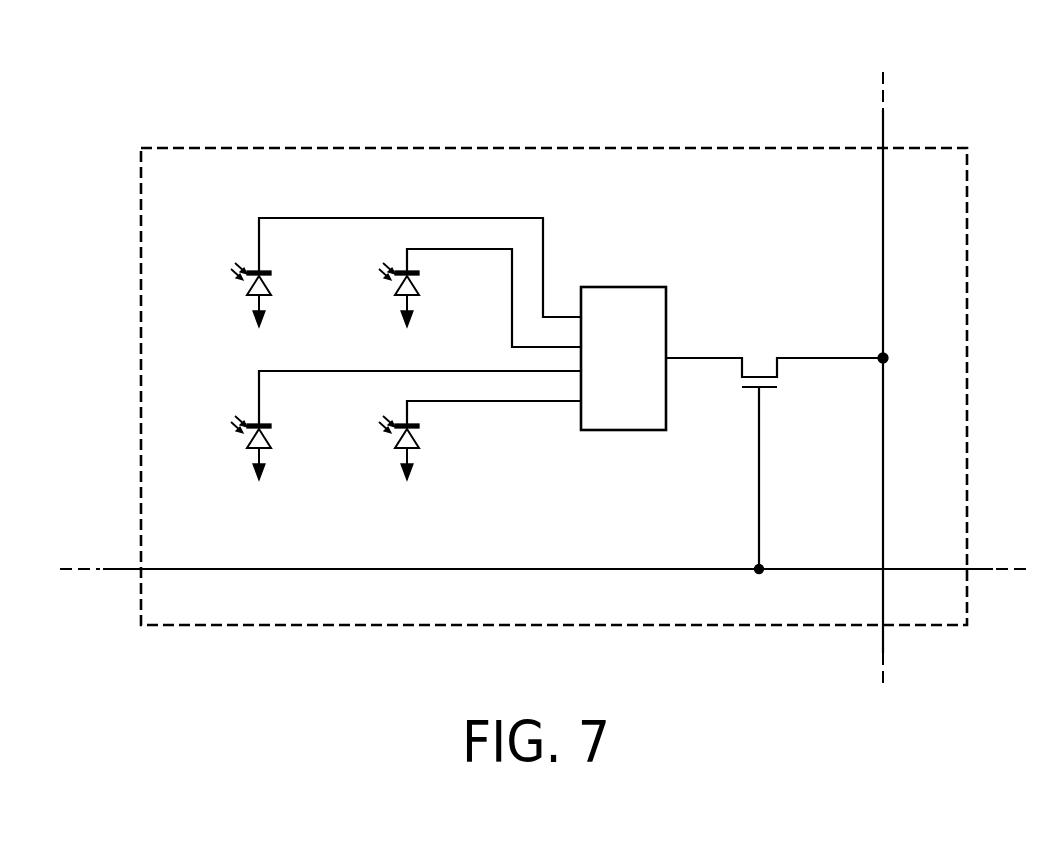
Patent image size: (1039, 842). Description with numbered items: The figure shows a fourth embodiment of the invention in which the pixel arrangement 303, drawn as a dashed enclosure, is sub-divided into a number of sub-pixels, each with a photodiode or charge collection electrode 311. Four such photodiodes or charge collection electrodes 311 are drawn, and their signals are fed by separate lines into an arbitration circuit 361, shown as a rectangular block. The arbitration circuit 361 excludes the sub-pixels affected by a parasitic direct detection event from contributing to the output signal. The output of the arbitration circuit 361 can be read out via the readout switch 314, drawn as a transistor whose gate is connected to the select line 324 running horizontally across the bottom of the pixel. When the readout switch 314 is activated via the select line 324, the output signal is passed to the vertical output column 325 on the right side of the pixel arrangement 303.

The pixel arrangement 303 is at (141, 188).
The photodiodes or charge collection electrodes 311 is at (273, 283).
The readout switch 314 is at (761, 373).
The select line 324 is at (198, 568).
The output column 325 is at (883, 190).
The arbitration circuit 361 is at (622, 286).